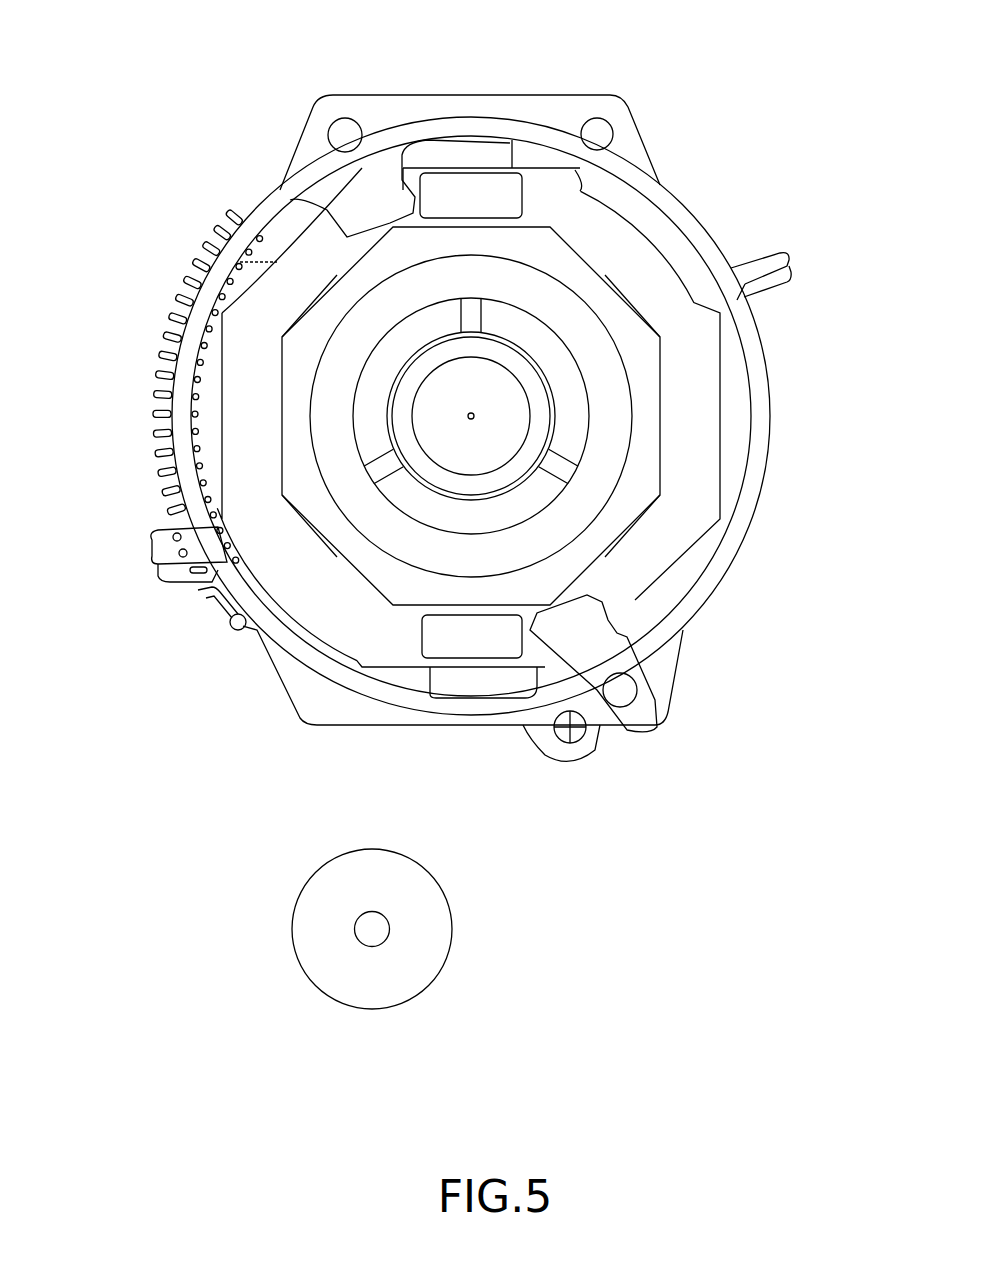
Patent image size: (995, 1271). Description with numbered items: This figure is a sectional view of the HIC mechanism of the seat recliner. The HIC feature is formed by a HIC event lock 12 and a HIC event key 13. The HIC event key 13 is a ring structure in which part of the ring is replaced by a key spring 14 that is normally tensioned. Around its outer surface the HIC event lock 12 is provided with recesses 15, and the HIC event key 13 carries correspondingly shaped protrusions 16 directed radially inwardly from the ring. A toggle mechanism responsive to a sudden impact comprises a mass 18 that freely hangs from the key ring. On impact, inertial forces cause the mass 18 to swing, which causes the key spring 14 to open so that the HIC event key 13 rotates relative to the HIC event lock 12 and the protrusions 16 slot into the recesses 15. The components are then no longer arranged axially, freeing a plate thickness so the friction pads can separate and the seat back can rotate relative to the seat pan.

The HIC event lock 12 is at (610, 253).
The HIC event key 13 is at (358, 177).
The key spring 14 is at (172, 323).
The recesses 15 is at (463, 637).
The protrusions 16 is at (580, 632).
The mass 18 is at (432, 947).